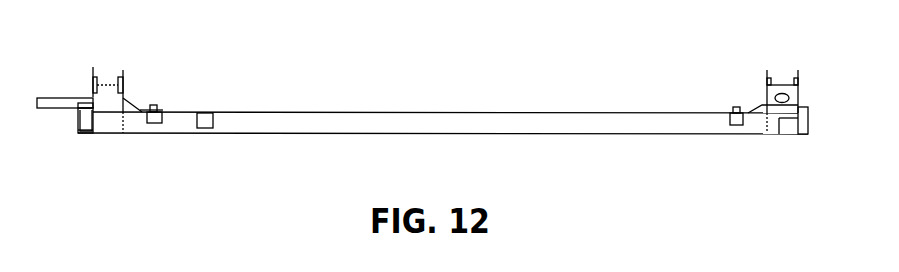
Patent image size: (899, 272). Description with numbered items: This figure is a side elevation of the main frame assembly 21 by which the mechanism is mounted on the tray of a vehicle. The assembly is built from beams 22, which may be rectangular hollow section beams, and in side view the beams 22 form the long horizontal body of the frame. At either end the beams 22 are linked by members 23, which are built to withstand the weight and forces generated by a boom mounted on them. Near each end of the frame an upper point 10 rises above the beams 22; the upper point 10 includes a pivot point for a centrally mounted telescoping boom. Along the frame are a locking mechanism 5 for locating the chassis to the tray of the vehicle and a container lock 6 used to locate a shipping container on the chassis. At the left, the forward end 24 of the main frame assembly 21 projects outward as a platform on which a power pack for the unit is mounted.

The locking mechanism 5 is at (214, 120).
The container lock 6 is at (161, 97).
The upper point 10 is at (123, 72).
The main frame assembly 21 is at (452, 110).
The beam 22 is at (603, 122).
The member 23 is at (102, 136).
The forward end 24 is at (60, 98).